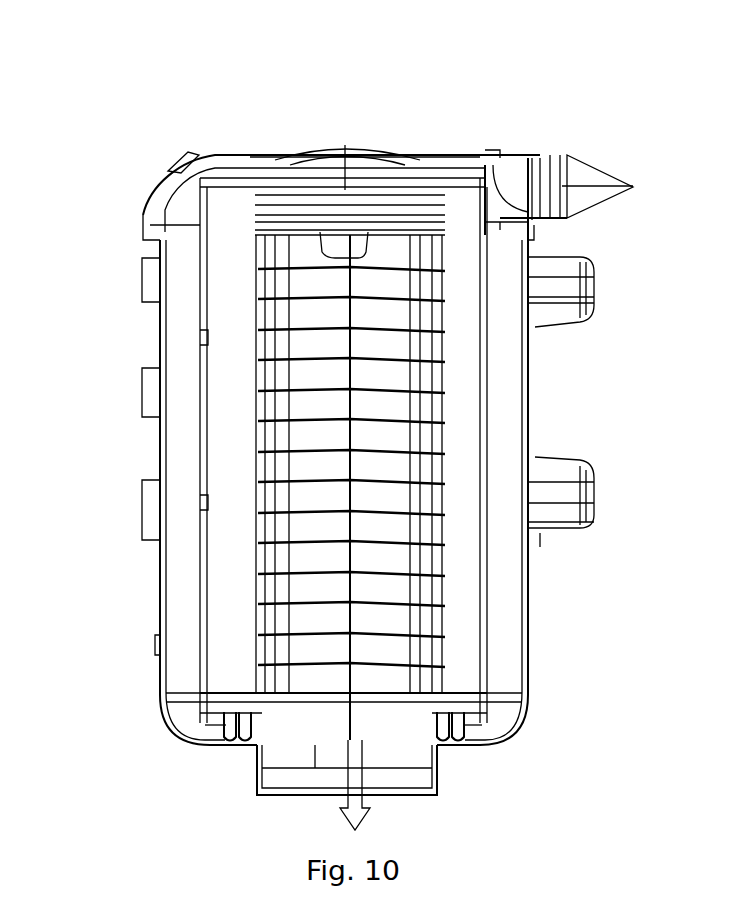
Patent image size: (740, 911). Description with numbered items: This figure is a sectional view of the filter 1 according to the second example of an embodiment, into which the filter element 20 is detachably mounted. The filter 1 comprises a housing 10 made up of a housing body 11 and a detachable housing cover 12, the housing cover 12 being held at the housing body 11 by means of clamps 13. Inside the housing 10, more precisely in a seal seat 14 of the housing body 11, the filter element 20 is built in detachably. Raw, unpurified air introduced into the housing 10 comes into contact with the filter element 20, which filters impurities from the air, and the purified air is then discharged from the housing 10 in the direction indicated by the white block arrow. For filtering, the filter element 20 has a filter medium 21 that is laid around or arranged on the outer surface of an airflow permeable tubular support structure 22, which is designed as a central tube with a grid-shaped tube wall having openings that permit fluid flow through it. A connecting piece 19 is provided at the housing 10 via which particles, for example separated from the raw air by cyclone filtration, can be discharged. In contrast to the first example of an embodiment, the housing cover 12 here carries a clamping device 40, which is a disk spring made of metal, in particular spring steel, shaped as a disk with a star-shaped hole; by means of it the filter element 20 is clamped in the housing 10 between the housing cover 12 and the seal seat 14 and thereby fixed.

The filter 1 is at (255, 70).
The housing 10 is at (100, 180).
The housing body 11 is at (152, 438).
The housing cover 12 is at (243, 150).
The clamps 13 is at (172, 158).
The seal seat 14 is at (215, 762).
The connecting piece 19 is at (565, 160).
The filter element 20 is at (505, 372).
The filter medium 21 is at (490, 440).
The tubular support structure 22 is at (382, 702).
The clamping device 40 is at (315, 150).